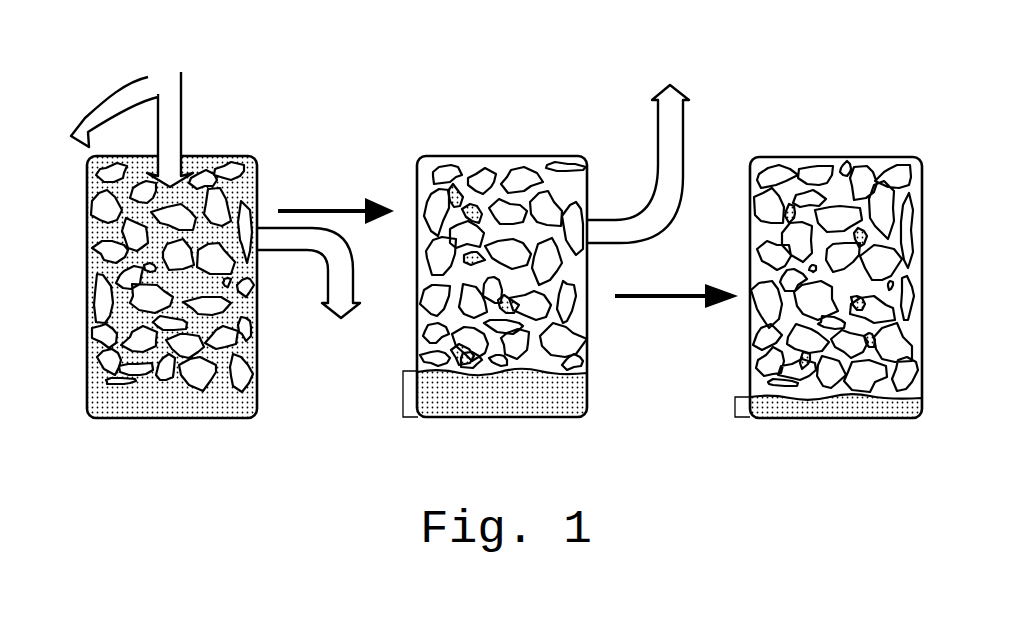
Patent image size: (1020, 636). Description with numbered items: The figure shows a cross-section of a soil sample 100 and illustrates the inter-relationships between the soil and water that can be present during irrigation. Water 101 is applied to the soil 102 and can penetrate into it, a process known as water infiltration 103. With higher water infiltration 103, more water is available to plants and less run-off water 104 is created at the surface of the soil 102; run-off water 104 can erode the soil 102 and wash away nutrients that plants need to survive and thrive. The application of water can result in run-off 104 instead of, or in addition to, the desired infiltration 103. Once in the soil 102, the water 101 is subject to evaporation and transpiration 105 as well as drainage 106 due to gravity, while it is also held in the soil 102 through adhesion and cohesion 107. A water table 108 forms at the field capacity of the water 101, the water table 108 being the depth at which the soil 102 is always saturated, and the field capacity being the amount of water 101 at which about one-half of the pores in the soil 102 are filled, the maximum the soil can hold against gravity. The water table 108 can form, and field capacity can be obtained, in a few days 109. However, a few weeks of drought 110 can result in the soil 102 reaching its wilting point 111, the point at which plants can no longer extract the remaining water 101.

The soil sample 100 is at (87, 293).
The water 101 is at (172, 87).
The soil 102 is at (87, 210).
The water infiltration 103 is at (184, 130).
The run-off water 104 is at (79, 125).
The evaporation and transpiration 105 is at (681, 90).
The drainage 106 is at (332, 320).
The adhesion and cohesion 107 is at (503, 182).
The water table 108 is at (403, 395).
The few days 109 is at (327, 208).
The few weeks of drought 110 is at (671, 293).
The wilting point 111 is at (735, 408).